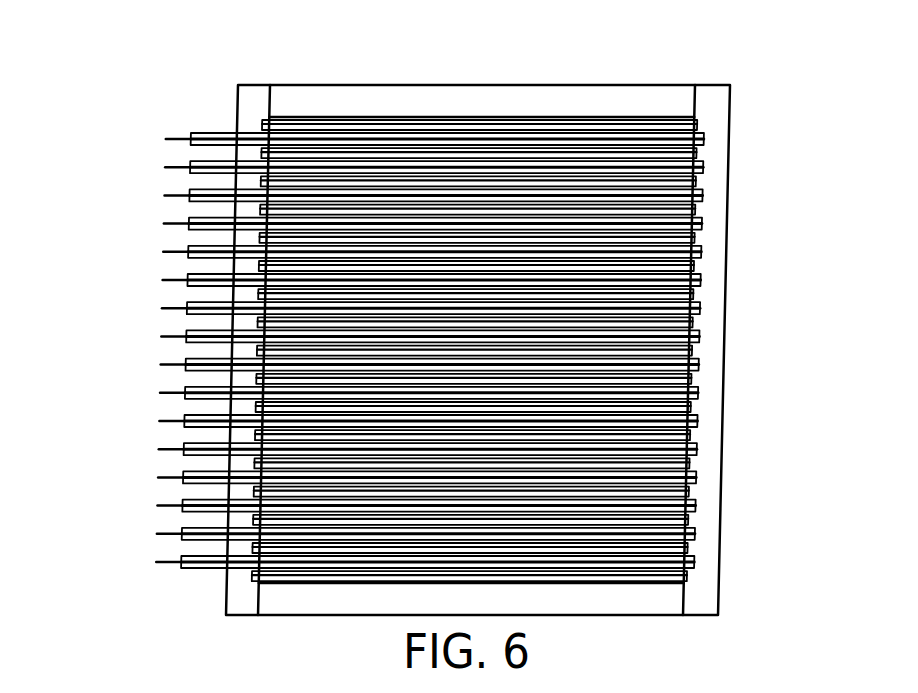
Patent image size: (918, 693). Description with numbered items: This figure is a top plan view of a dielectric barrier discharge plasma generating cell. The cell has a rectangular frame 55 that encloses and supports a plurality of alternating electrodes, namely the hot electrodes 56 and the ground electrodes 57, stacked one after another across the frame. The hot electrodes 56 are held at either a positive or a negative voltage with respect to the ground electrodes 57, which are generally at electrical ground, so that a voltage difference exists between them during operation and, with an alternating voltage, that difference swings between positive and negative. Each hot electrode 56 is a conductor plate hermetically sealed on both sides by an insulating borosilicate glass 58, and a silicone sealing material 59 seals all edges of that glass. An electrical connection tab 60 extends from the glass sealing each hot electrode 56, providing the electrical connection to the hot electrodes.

The rectangular frame 55 is at (263, 100).
The hot electrode 56 is at (580, 140).
The ground electrode 57 is at (662, 128).
The borosilicate glass 58 is at (707, 252).
The silicone sealing material 59 is at (707, 193).
The electrical connection tab 60 is at (170, 194).